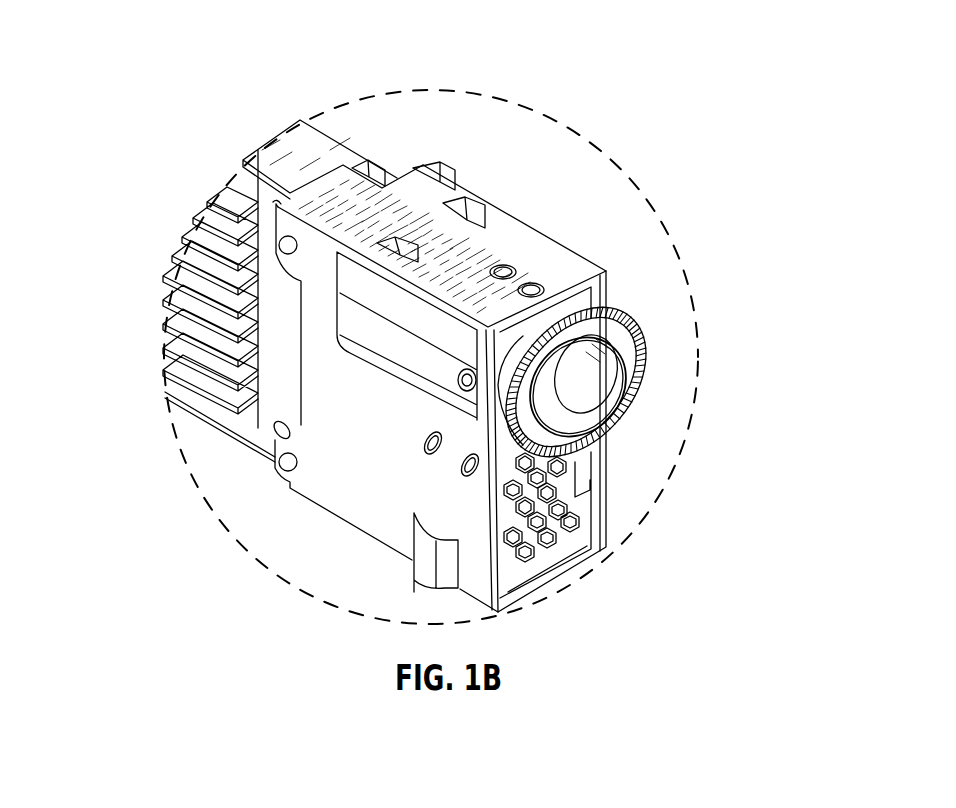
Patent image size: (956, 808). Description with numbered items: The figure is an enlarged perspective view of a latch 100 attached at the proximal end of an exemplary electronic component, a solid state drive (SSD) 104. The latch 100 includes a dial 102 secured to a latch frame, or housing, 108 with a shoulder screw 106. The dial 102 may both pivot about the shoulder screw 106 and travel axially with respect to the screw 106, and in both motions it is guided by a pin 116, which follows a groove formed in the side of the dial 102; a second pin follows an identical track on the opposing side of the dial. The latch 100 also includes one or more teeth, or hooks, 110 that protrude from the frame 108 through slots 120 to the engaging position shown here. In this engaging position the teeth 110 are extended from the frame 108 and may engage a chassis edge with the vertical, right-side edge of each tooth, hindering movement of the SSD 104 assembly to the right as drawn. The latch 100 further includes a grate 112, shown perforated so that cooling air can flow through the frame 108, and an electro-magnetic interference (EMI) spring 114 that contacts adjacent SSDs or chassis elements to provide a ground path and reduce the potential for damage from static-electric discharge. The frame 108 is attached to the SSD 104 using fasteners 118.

The latch 100 is at (666, 148).
The dial 102 is at (630, 312).
The solid state drive (SSD) 104 is at (200, 305).
The shoulder screw 106 is at (557, 372).
The latch frame (housing) 108 is at (347, 502).
The teeth (hooks) 110 is at (423, 258).
The grate 112 is at (563, 518).
The electro-magnetic interference (EMI) spring 114 is at (418, 555).
The pin 116 is at (467, 378).
The fasteners 118 is at (280, 250).
The slots 120 is at (380, 242).